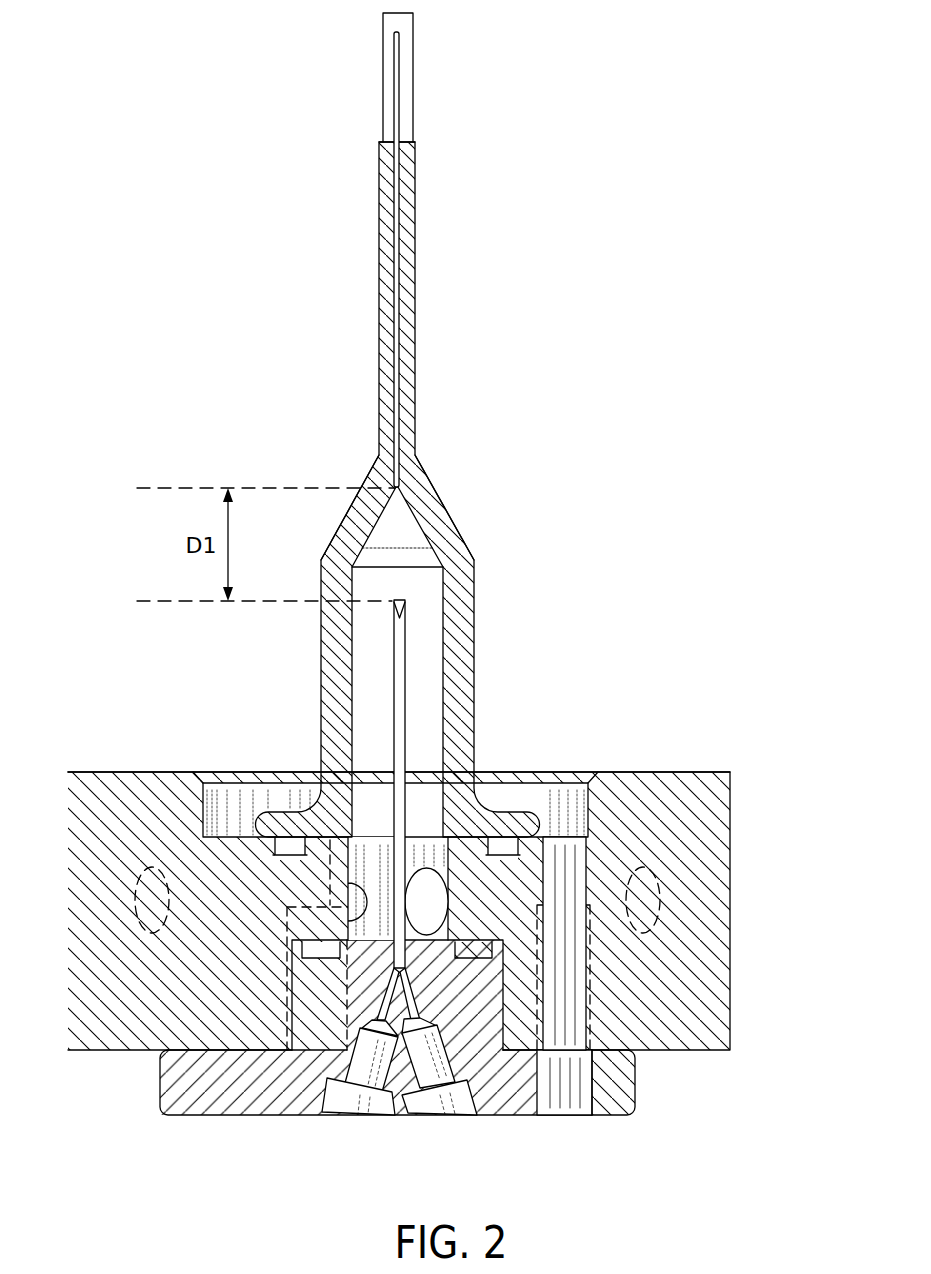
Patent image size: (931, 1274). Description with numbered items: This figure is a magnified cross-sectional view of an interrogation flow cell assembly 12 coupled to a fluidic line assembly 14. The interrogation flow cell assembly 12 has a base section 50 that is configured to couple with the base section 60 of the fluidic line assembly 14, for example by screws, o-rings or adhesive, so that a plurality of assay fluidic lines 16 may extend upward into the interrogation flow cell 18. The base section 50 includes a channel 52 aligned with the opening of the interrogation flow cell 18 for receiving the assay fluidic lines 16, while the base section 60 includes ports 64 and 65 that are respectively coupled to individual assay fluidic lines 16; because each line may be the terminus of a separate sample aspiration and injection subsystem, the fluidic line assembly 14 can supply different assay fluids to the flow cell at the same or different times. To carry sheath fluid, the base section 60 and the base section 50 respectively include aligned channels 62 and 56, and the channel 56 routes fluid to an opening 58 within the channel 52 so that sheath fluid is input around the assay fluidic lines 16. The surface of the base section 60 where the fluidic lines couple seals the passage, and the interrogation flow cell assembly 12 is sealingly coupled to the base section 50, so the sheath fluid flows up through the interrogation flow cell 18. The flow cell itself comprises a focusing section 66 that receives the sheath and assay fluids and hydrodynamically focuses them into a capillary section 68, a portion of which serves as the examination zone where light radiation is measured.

The interrogation flow cell assembly 12 is at (752, 803).
The fluidic line assembly 14 is at (659, 1086).
The assay fluidic lines 16 is at (407, 714).
The interrogation flow cell 18 is at (475, 657).
The base section 50 is at (655, 813).
The channel 52 is at (386, 875).
The channel 56 is at (568, 858).
The opening 58 is at (413, 910).
The base section 60 is at (612, 1107).
The channel 62 is at (562, 1107).
The port 64 is at (350, 1103).
The port 65 is at (438, 1100).
The focusing section 66 is at (485, 557).
The capillary section 68 is at (437, 284).